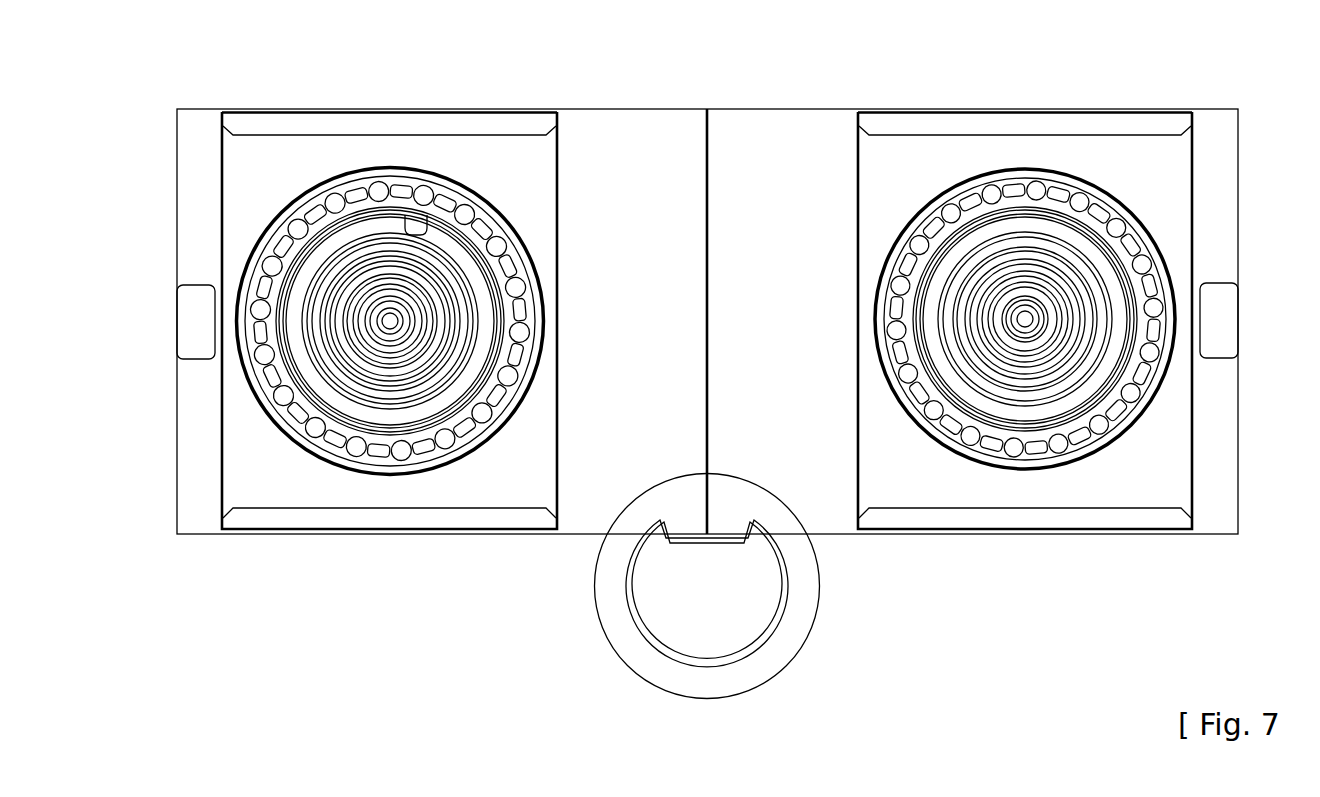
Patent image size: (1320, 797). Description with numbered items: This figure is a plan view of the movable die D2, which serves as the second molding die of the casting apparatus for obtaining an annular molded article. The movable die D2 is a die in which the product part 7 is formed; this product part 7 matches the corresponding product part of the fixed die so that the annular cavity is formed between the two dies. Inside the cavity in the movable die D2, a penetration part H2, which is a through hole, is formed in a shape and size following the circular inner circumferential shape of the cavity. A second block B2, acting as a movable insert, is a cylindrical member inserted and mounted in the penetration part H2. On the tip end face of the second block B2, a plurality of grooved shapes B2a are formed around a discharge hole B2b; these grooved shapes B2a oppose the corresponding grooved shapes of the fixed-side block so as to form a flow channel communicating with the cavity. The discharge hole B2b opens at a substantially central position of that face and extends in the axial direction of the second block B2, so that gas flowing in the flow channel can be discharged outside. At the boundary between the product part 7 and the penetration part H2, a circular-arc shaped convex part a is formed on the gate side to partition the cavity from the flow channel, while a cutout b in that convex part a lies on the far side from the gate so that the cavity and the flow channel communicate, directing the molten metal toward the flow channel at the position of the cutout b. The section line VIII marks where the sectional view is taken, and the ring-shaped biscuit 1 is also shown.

The biscuit 1 is at (790, 583).
The product part 7 is at (250, 388).
The second block B2 is at (717, 322).
The grooved shapes B2a is at (520, 395).
The discharge hole B2b is at (475, 307).
The convex part a is at (463, 272).
The cutout b is at (313, 277).
The penetration part H2 is at (371, 252).
The movable die D2 is at (819, 106).
The section line VIII- VIII is at (433, 60).